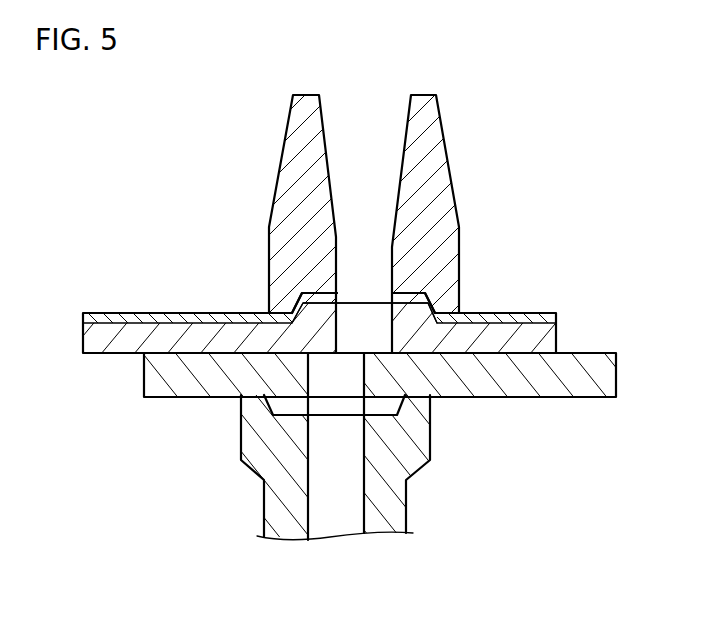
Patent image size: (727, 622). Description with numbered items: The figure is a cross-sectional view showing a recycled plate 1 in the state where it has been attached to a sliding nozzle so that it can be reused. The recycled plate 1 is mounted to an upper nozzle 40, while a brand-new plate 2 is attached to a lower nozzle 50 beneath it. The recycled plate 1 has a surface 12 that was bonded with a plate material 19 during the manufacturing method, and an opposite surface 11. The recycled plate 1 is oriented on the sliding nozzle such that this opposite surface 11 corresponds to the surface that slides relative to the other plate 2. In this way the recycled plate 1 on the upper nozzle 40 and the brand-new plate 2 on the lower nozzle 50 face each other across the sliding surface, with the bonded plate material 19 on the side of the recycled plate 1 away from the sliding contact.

The upper nozzle 40 is at (445, 153).
The recycled plate 1 is at (326, 333).
The surface 11 is at (108, 355).
The surface 12 is at (112, 316).
The plate material 19 is at (152, 312).
The plate 2 is at (616, 378).
The lower nozzle 50 is at (432, 443).